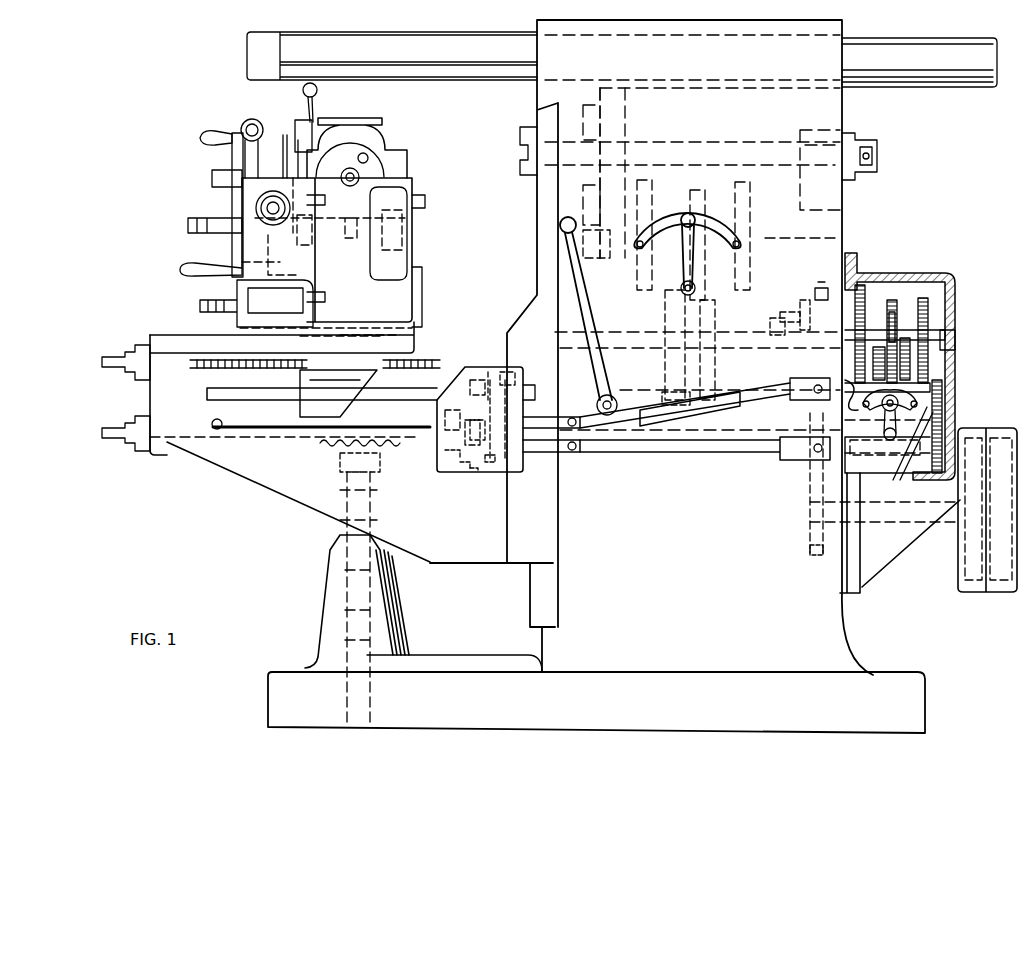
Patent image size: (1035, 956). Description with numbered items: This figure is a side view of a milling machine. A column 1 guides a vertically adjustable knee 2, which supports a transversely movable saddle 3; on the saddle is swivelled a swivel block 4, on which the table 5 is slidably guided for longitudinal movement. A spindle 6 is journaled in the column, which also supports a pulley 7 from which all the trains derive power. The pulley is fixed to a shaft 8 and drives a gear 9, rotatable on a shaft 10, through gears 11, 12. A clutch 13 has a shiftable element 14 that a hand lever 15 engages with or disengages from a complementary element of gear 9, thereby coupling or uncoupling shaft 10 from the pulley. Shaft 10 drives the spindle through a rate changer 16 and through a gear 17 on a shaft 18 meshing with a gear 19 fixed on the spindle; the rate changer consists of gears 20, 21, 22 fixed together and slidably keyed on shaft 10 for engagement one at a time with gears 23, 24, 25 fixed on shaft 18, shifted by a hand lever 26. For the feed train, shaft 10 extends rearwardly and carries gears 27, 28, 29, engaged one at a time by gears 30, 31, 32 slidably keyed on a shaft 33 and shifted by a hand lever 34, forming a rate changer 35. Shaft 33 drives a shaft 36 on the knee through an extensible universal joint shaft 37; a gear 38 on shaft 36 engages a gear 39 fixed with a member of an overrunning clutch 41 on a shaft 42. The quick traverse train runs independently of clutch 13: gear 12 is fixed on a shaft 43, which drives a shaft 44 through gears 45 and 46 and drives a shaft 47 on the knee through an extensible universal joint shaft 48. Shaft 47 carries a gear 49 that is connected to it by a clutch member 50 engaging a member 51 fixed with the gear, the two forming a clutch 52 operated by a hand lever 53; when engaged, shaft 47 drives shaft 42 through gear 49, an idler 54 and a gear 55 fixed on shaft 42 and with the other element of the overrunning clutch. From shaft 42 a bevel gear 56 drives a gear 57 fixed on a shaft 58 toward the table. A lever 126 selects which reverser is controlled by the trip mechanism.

The column 1 is at (540, 210).
The knee 2 is at (295, 495).
The saddle 3 is at (420, 335).
The swivel block 4 is at (418, 301).
The table 5 is at (415, 262).
The spindle 6 is at (520, 140).
The pulley 7 is at (990, 430).
The shaft 8 is at (910, 512).
The gear 9 is at (822, 290).
The shaft 10 is at (770, 325).
The gear 11 is at (810, 537).
The gear 12 is at (812, 462).
The lever 126 is at (200, 304).
The clutch 13 is at (800, 310).
The shiftable element 14 is at (800, 316).
The hand lever 15 is at (565, 250).
The rate changer 16 is at (720, 210).
The gear 17 is at (613, 258).
The shaft 18 is at (770, 238).
The gear 19 is at (620, 118).
The gear 20 is at (665, 375).
The gear 21 is at (690, 402).
The gear 22 is at (715, 372).
The gear 23 is at (640, 180).
The gear 24 is at (700, 195).
The gear 25 is at (740, 185).
The hand lever 26 is at (710, 215).
The gear 27 is at (868, 278).
The gear 28 is at (892, 298).
The gear 29 is at (930, 292).
The gear 30 is at (878, 345).
The gear 31 is at (903, 340).
The gear 32 is at (906, 340).
The shaft 33 is at (855, 396).
The hand lever 34 is at (942, 405).
The rate changer 35 is at (955, 345).
The shaft 36 is at (545, 415).
The extensible universal joint shaft 37 is at (718, 403).
The gear 38 is at (520, 405).
The gear 39 is at (510, 375).
The overrunning clutch 41 is at (478, 385).
The shaft 42 is at (420, 398).
The shaft 43 is at (885, 455).
The shaft 44 is at (872, 460).
The gear 45 is at (918, 420).
The gear 46 is at (922, 448).
The shaft 47 is at (550, 450).
The extensible universal joint shaft 48 is at (592, 447).
The gear 49 is at (490, 465).
The clutch member 50 is at (470, 465).
The clutch member 51 is at (475, 470).
The clutch 52 is at (450, 455).
The hand lever 53 is at (210, 435).
The idler 54 is at (482, 425).
The gear 55 is at (495, 372).
The bevel gear 56 is at (315, 417).
The gear 57 is at (378, 387).
The shaft 58 is at (360, 346).